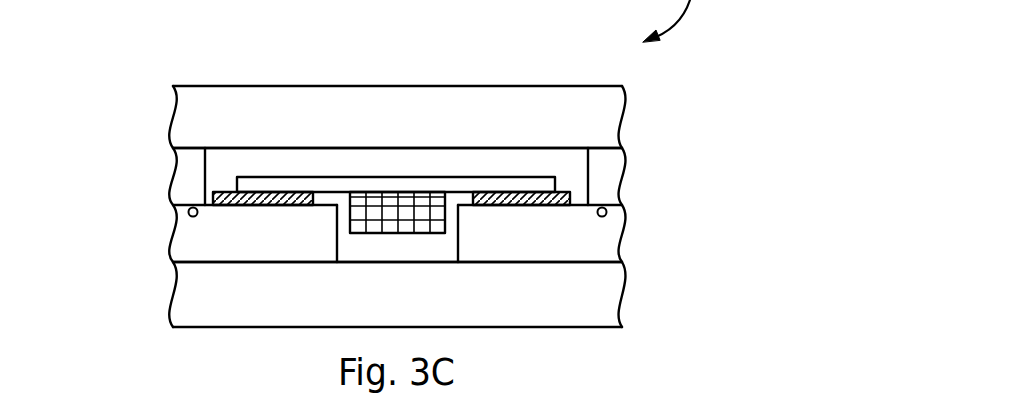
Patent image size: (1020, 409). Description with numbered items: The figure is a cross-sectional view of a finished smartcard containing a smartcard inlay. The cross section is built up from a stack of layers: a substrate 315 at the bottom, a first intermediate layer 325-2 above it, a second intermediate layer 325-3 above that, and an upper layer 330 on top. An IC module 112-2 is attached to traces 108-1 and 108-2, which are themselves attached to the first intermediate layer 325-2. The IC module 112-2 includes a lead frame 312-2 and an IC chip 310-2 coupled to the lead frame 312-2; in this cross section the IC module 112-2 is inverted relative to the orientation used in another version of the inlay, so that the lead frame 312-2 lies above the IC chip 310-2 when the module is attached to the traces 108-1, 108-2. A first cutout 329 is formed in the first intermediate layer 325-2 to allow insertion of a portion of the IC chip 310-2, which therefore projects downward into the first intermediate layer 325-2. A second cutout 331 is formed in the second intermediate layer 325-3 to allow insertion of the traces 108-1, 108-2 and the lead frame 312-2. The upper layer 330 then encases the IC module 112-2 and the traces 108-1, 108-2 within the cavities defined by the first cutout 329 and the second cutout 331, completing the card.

The IC module 112-2 is at (240, 175).
The lead frame 312-2 is at (472, 178).
The upper layer 330 is at (628, 108).
The second cutout 331 is at (218, 167).
The second intermediate layer 325-3 is at (628, 173).
The trace 108-1 is at (250, 205).
The first intermediate layer 325-2 is at (628, 225).
The first cutout 329 is at (357, 253).
The substrate 315 is at (628, 297).
The IC chip 310-2 is at (425, 233).
The trace 108-2 is at (563, 207).